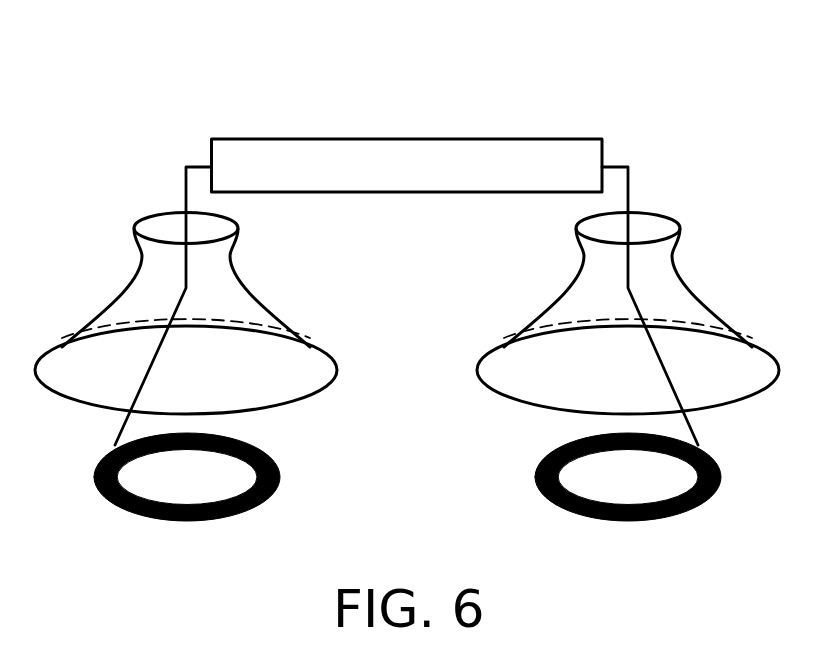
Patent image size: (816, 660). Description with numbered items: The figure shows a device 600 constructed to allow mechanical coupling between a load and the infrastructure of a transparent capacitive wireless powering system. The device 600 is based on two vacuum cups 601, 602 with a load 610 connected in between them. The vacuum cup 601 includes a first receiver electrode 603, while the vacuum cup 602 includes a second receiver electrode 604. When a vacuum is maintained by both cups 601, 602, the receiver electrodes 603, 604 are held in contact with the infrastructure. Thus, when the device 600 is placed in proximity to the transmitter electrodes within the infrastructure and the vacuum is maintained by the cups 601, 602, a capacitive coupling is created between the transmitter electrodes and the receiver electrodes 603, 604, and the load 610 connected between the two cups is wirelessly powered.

The device 600 is at (702, 106).
The vacuum cup 601 is at (699, 304).
The vacuum cup 602 is at (115, 304).
The first receiver electrode 603 is at (689, 510).
The second receiver electrode 604 is at (126, 510).
The load 610 is at (406, 139).